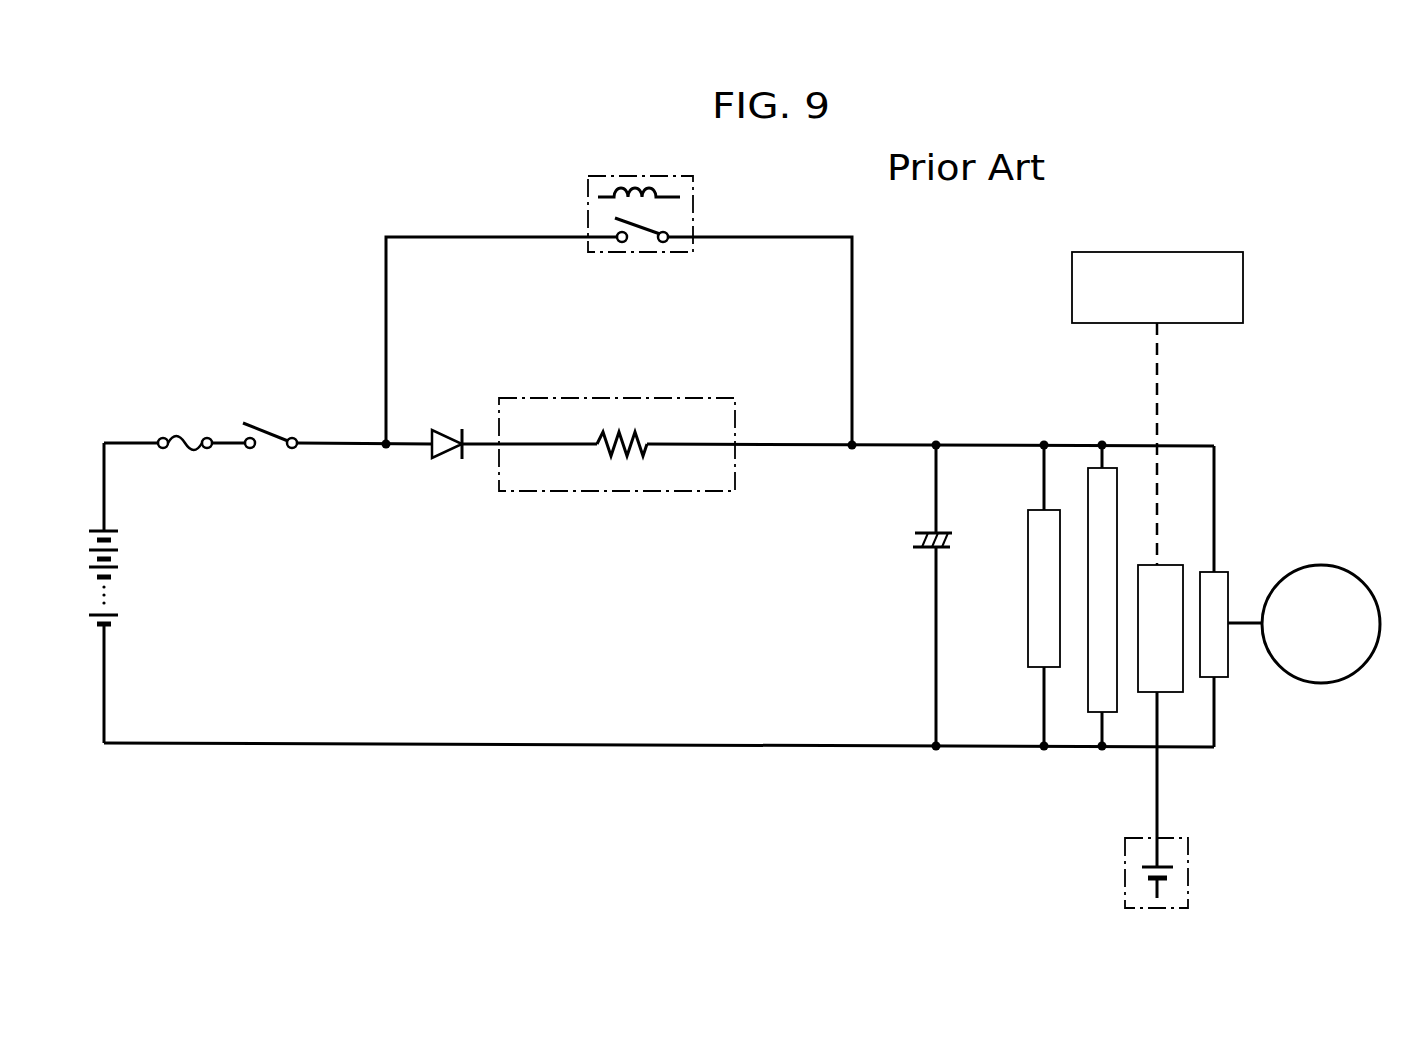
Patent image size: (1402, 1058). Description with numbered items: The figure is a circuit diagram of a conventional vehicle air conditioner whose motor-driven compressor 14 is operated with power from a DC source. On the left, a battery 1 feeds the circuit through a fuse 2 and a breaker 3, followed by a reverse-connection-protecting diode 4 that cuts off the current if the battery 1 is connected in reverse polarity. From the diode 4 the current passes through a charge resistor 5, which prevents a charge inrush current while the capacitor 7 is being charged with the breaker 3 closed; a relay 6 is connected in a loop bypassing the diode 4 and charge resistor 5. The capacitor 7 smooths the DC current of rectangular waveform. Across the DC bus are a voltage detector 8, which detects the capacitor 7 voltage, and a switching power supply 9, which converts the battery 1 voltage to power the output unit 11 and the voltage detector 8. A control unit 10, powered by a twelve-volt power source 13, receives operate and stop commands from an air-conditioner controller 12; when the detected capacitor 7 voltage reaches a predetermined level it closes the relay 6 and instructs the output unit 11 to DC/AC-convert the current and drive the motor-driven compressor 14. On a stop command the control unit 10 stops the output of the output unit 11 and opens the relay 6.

The battery 1 is at (125, 565).
The fuse 2 is at (187, 425).
The breaker 3 is at (273, 423).
The reverse-connection-protecting diode 4 is at (448, 427).
The charge resistor 5 is at (698, 398).
The relay 6 is at (693, 188).
The capacitor 7 is at (948, 527).
The voltage detector 8 is at (1053, 510).
The switching power supply 9 is at (1110, 467).
The control unit 10 is at (1168, 563).
The output unit 11 is at (1222, 570).
The air-conditioner controller 12 is at (1228, 250).
The 12V power source 13 is at (1168, 835).
The motor-driven compressor 14 is at (1340, 567).